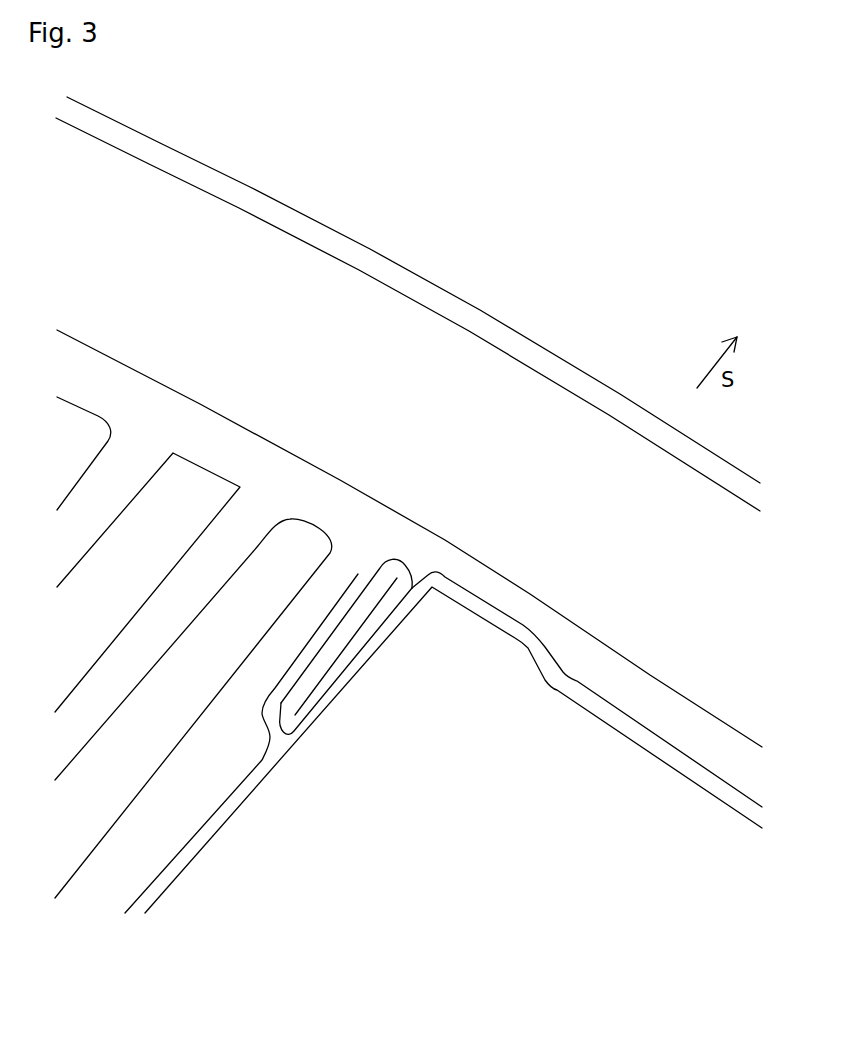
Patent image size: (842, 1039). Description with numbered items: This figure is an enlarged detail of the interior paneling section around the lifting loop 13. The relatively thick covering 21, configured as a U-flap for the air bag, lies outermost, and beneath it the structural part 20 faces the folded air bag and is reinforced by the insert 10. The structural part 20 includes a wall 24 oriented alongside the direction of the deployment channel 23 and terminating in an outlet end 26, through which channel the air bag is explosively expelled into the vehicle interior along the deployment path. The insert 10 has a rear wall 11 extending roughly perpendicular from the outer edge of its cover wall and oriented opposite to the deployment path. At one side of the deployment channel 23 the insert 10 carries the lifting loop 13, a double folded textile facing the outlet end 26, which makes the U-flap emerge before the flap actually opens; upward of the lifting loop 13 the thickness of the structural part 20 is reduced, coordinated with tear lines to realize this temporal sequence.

The insert 10 is at (467, 597).
The rear wall 11 is at (241, 788).
The lifting loop 13 is at (400, 570).
The structural part 20 is at (340, 505).
The covering 21 is at (587, 505).
The deployment channel 23 is at (228, 743).
The wall 24 is at (228, 743).
The outlet end 26 is at (360, 572).